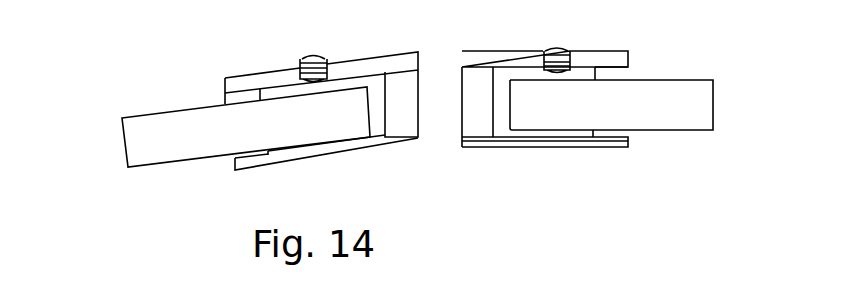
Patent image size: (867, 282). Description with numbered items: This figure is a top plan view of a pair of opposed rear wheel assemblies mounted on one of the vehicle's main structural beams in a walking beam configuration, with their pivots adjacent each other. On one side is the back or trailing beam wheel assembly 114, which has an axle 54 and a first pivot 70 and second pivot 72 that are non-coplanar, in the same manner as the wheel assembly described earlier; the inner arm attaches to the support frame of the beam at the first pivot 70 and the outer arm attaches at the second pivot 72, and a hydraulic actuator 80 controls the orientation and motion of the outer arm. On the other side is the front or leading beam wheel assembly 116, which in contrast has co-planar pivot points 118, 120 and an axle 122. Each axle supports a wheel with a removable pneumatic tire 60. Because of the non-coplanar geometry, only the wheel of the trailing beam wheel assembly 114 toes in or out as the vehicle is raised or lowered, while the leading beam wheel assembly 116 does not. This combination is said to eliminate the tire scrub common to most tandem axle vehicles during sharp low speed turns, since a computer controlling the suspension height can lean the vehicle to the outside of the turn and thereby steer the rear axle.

The axle 54 is at (220, 97).
The removable pneumatic tire 60 is at (431, 120).
The first pivot 70 is at (423, 142).
The second pivot 72 is at (423, 70).
The hydraulic actuator 80 is at (312, 58).
The trailing beam wheel assembly 114 is at (163, 153).
The leading beam wheel assembly 116 is at (702, 98).
The pivot point 118 is at (455, 140).
The pivot point 120 is at (458, 50).
The axle 122 is at (623, 148).